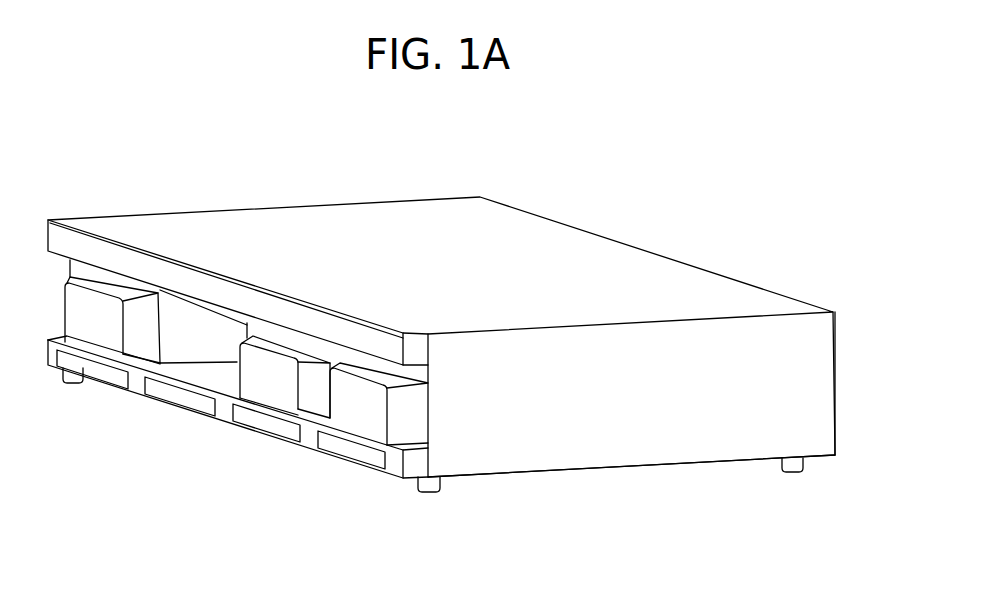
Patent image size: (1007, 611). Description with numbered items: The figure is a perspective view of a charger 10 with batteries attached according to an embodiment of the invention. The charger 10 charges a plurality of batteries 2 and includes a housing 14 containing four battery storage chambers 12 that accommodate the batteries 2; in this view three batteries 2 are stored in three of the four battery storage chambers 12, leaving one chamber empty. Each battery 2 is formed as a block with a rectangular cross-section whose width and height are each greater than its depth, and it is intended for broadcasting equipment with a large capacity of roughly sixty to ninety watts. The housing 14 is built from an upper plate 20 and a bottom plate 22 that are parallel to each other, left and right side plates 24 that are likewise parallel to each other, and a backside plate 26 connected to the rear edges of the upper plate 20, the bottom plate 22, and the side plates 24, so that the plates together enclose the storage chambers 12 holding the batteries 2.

The charger 10 is at (478, 329).
The battery 2 is at (99, 306).
The battery storage chamber 12 is at (205, 352).
The housing 14 is at (638, 305).
The upper plate 20 is at (570, 253).
The bottom plate 22 is at (517, 473).
The side plate 24 is at (665, 450).
The backside plate 26 is at (836, 393).